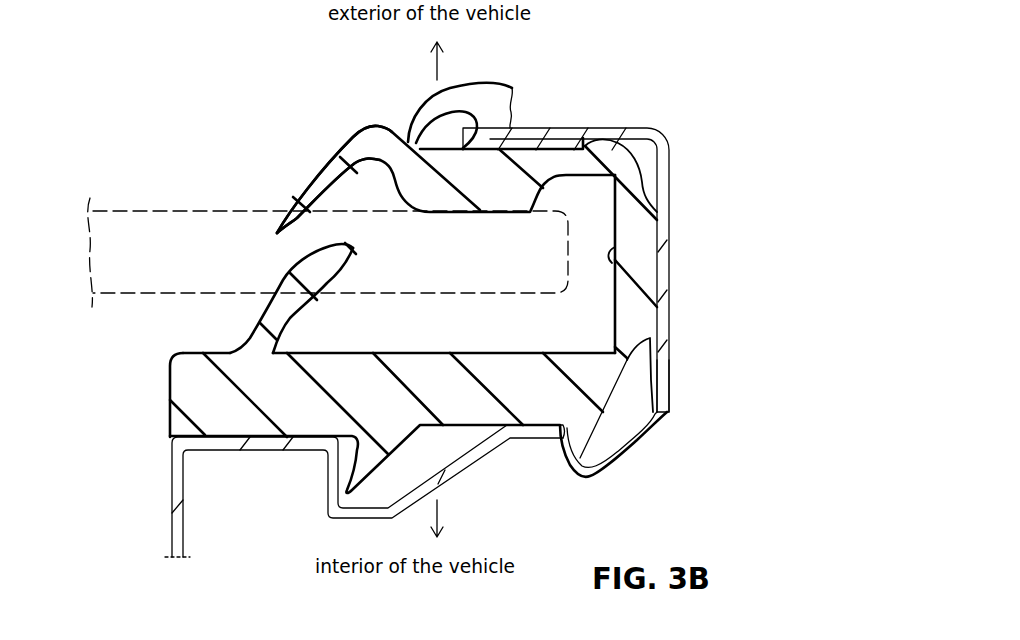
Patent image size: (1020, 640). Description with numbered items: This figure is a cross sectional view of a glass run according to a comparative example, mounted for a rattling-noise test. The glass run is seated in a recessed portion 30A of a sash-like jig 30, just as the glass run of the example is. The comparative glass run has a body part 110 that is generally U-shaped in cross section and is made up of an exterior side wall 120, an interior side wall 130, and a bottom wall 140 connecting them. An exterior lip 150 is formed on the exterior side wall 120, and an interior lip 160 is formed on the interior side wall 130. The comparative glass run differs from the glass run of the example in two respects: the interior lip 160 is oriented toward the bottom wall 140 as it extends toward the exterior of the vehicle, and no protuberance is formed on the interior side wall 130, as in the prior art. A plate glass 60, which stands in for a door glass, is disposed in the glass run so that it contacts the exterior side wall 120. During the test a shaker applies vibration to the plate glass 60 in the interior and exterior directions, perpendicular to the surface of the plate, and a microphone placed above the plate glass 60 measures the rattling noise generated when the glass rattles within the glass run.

The sash-like jig 30 is at (172, 490).
The recessed portion 30A is at (656, 382).
The plate glass 60 is at (112, 210).
The body part 110 is at (748, 183).
The exterior side wall 120 is at (573, 177).
The interior side wall 130 is at (577, 352).
The bottom wall 140 is at (615, 247).
The exterior lip 150 is at (320, 160).
The interior lip 160 is at (258, 315).